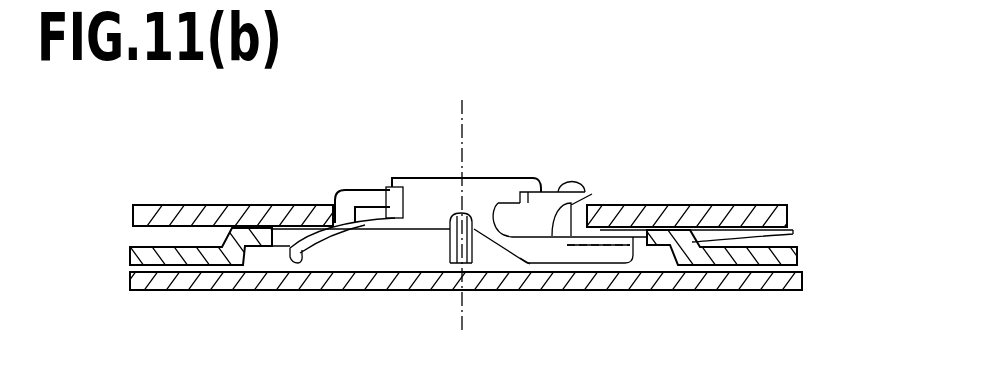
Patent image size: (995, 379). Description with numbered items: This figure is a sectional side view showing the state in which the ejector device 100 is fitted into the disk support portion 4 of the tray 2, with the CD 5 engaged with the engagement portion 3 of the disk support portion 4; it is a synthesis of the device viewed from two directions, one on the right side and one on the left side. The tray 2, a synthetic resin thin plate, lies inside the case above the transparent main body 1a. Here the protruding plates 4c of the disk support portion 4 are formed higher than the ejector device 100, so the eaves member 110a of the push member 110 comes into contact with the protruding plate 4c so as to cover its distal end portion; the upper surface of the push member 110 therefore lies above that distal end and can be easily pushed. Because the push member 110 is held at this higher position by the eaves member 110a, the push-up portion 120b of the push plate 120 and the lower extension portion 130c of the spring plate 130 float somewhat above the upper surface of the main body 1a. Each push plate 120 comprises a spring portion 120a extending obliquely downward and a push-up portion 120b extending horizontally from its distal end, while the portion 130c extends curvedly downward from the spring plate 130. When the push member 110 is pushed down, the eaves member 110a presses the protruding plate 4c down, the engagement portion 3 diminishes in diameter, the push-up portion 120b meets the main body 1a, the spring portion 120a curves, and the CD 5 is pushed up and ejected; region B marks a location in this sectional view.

The ejector device 100 is at (495, 214).
The push member 110 is at (470, 180).
The eaves member 110a is at (392, 186).
The push plate 120 is at (574, 250).
The spring portion 120a is at (510, 258).
The push-up portion 120b is at (560, 253).
The spring plate 130 is at (325, 252).
The lower extension portion 130c is at (294, 263).
The protruding plate 4c is at (575, 200).
The engagement portion 3 is at (612, 198).
The CD 5 is at (788, 220).
The disk support portion 4 is at (795, 234).
The tray 2 is at (798, 258).
The main body 1a is at (803, 287).
The contact region B is at (527, 256).